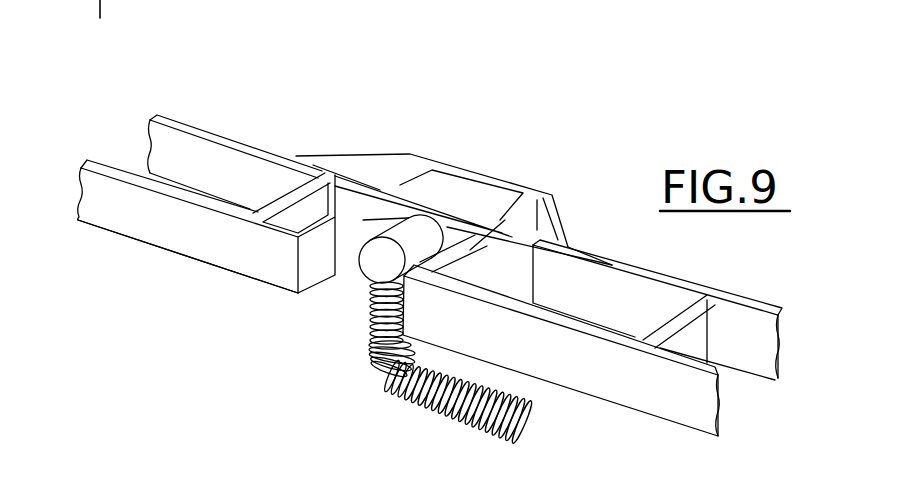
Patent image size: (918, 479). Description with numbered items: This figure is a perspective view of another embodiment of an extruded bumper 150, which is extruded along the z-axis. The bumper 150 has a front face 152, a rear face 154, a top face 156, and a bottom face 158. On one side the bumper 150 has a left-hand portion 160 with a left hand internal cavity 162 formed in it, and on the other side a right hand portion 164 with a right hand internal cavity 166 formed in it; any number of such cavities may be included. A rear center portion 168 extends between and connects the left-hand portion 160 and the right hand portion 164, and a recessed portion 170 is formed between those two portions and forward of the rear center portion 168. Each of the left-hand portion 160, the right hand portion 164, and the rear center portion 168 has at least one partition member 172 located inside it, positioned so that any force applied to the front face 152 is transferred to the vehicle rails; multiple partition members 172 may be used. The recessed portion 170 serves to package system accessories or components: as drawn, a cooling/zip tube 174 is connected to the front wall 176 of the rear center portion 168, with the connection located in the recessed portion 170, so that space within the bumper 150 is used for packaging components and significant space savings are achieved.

The bumper 150 is at (454, 179).
The front face 152 is at (200, 195).
The rear face 154 is at (592, 327).
The top face 156 is at (337, 173).
The bottom face 158 is at (190, 263).
The left-hand portion 160 is at (140, 238).
The left hand internal cavity 162 is at (124, 129).
The right hand portion 164 is at (589, 369).
The right hand internal cavity 166 is at (637, 290).
The rear center portion 168 is at (443, 158).
The recessed portion 170 is at (351, 280).
The partition member 172 is at (273, 203).
The cooling/zip tube 174 is at (415, 405).
The front wall 176 is at (363, 220).